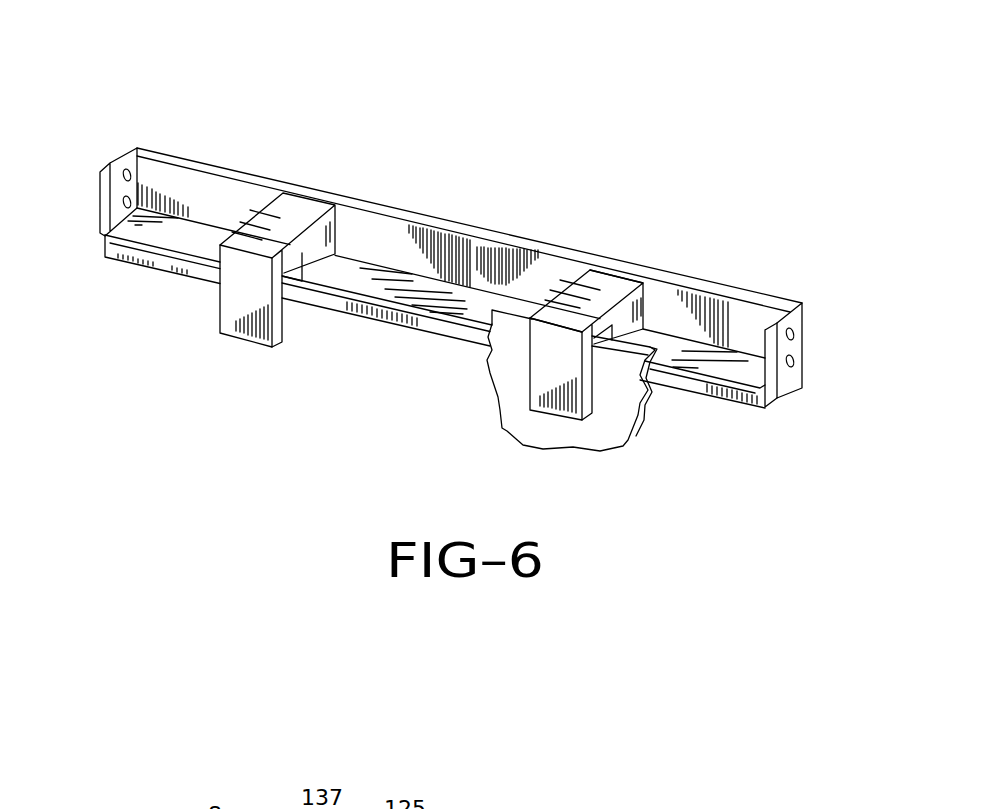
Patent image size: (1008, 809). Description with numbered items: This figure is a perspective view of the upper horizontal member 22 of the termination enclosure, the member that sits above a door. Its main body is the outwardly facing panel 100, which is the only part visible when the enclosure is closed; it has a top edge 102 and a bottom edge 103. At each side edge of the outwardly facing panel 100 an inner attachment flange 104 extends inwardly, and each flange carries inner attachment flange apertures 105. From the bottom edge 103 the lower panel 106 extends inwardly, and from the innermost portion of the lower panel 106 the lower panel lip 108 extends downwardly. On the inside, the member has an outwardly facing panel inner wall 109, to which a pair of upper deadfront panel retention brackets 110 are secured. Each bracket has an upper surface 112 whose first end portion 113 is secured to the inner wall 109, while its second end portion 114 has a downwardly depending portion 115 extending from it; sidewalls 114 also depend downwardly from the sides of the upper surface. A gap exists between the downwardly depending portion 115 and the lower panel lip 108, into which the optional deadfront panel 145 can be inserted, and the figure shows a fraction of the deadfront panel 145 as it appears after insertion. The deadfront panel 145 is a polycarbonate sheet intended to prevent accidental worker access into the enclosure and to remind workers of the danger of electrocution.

The upper horizontal member 22 is at (560, 108).
The outwardly facing panel 100 is at (803, 305).
The top edge 102 is at (495, 235).
The bottom edge 103 is at (783, 394).
The inner attachment flange 104 is at (116, 194).
The inner attachment flange apertures 105 is at (129, 172).
The lower panel 106 is at (366, 287).
The lower panel lip 108 is at (702, 386).
The outwardly facing panel inner wall 109 is at (399, 249).
The upper deadfront panel retention brackets 110 is at (340, 212).
The upper surface 112 is at (290, 228).
The first end portion 113 is at (602, 276).
The second end portion 114 is at (554, 332).
The downwardly depending portion 115 is at (243, 317).
The deadfront panel 145 is at (502, 372).